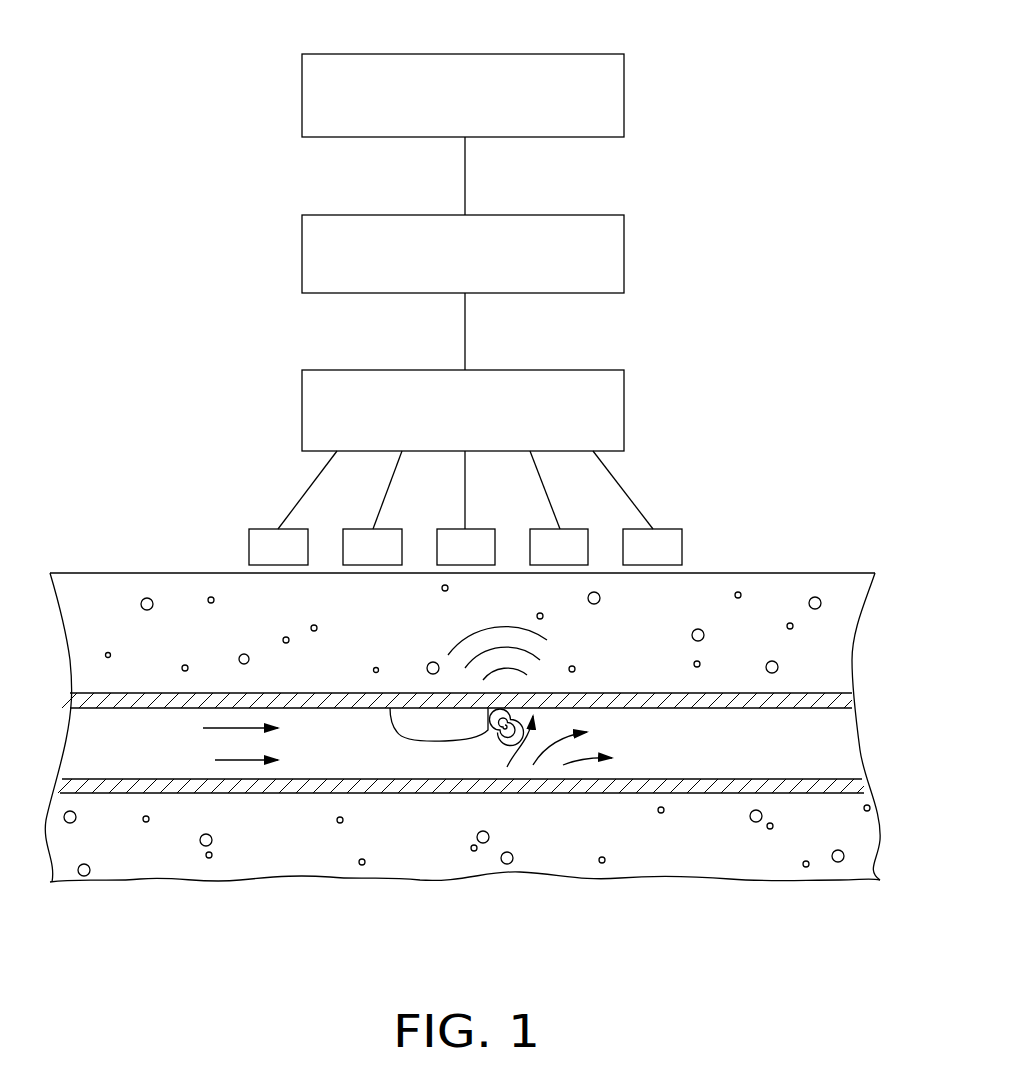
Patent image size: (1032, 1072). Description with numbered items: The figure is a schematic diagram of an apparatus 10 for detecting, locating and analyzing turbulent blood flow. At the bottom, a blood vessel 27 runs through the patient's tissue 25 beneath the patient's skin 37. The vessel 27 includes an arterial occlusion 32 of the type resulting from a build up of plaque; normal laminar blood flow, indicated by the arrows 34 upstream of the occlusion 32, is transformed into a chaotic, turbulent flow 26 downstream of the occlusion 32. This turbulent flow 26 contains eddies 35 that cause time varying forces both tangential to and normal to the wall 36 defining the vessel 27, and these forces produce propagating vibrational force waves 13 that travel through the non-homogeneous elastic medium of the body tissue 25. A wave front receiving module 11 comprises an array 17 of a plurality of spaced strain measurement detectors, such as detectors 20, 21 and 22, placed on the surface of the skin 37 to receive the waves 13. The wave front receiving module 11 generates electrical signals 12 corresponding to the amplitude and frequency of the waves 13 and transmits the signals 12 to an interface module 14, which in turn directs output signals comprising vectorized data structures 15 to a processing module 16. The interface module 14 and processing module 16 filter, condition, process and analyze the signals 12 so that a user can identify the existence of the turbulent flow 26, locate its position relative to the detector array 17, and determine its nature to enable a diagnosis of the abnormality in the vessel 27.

The apparatus 10 is at (733, 278).
The wave front receiving module 11 is at (555, 370).
The electrical signals 12 is at (465, 313).
The vibrational force waves 13 is at (448, 655).
The interface module 14 is at (555, 215).
The vectorized data structures 15 is at (465, 150).
The processing module 16 is at (555, 54).
The detector array 17 is at (718, 482).
The detector 20 is at (249, 541).
The detector 21 is at (343, 541).
The detector 22 is at (437, 541).
The patient's tissue 25 is at (160, 635).
The turbulent flow 26 is at (599, 742).
The vessel 27 is at (532, 793).
The arterial occlusion 32 is at (397, 732).
The arrows indicating laminar blood flow 34 is at (215, 760).
The eddies 35 is at (490, 745).
The vessel wall 36 is at (147, 786).
The patient's skin 37 is at (765, 573).